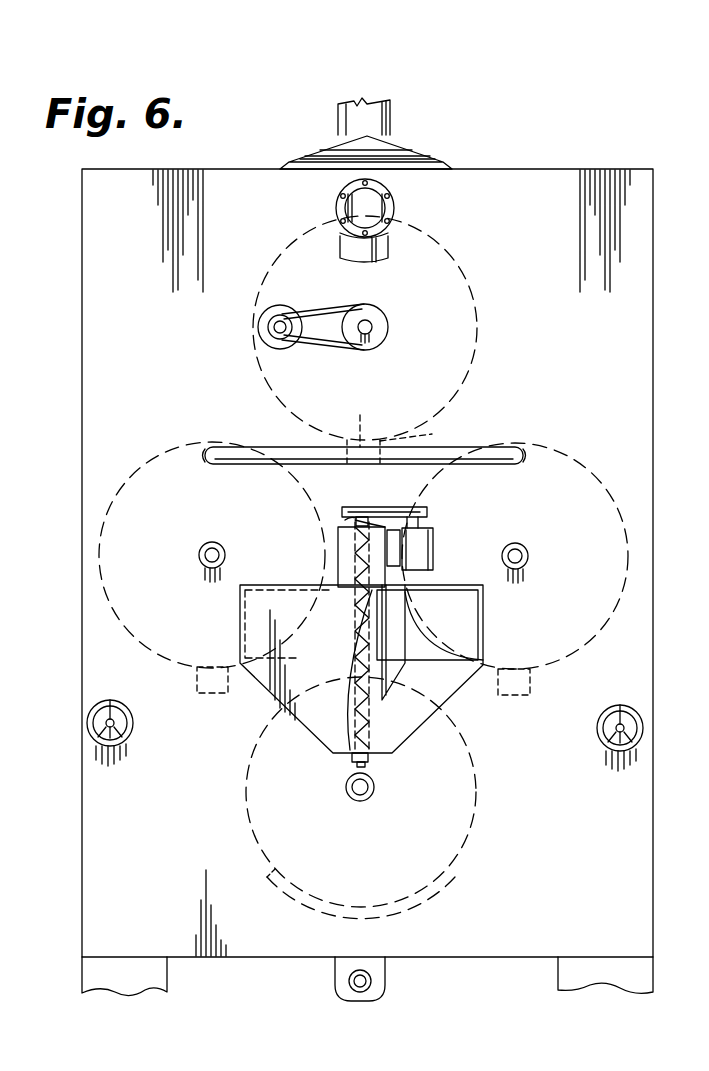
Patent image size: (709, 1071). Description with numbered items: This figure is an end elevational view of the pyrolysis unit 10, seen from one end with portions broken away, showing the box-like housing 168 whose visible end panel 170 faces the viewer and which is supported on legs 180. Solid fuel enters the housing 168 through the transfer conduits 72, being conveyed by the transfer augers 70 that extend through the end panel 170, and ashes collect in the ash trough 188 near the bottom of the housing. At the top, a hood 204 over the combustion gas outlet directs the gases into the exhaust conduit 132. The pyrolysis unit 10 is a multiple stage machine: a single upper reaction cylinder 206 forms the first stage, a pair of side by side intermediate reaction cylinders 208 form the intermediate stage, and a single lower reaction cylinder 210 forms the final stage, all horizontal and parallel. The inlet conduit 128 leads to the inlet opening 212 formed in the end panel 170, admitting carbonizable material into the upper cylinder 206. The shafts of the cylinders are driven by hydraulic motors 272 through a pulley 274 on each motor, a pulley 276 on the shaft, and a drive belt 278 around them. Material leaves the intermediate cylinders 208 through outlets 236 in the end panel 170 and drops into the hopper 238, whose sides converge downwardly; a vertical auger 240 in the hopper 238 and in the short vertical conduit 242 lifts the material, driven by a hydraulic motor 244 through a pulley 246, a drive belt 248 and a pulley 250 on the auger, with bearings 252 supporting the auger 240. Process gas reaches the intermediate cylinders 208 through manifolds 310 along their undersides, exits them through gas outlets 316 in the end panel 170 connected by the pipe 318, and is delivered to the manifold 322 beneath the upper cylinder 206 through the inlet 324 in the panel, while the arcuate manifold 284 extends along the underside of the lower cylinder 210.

The pyrolysis unit 10 is at (637, 121).
The transfer auger 70 is at (134, 724).
The transfer conduit 72 is at (108, 700).
The inlet conduit 128 is at (388, 246).
The exhaust conduit 132 is at (390, 118).
The housing 168 is at (553, 163).
The end panel 170 is at (655, 818).
The leg 180 is at (167, 976).
The ash trough 188 is at (385, 982).
The hood 204 is at (430, 160).
The upper reaction cylinder 206 is at (470, 283).
The intermediate reaction cylinder 208 is at (138, 465).
The lower reaction cylinder 210 is at (475, 804).
The inlet opening 212 is at (370, 225).
The outlet 236 is at (256, 619).
The hopper 238 is at (268, 676).
The vertical auger 240 is at (370, 700).
The vertical conduit 242 is at (338, 560).
The hydraulic motor 244 is at (432, 568).
The pulley 246 is at (420, 510).
The drive belt 248 is at (396, 506).
The pulley 250 is at (355, 515).
The bearing 252 is at (345, 520).
The hydraulic motor 272 is at (270, 315).
The pulley 274 is at (278, 334).
The pulley 276 is at (385, 320).
The drive belt 278 is at (314, 312).
The arcuate manifold 284 is at (445, 890).
The manifold 310 is at (197, 680).
The gas outlet 316 is at (210, 466).
The pipe 318 is at (462, 452).
The manifold 322 is at (408, 436).
The inlet 324 is at (358, 416).